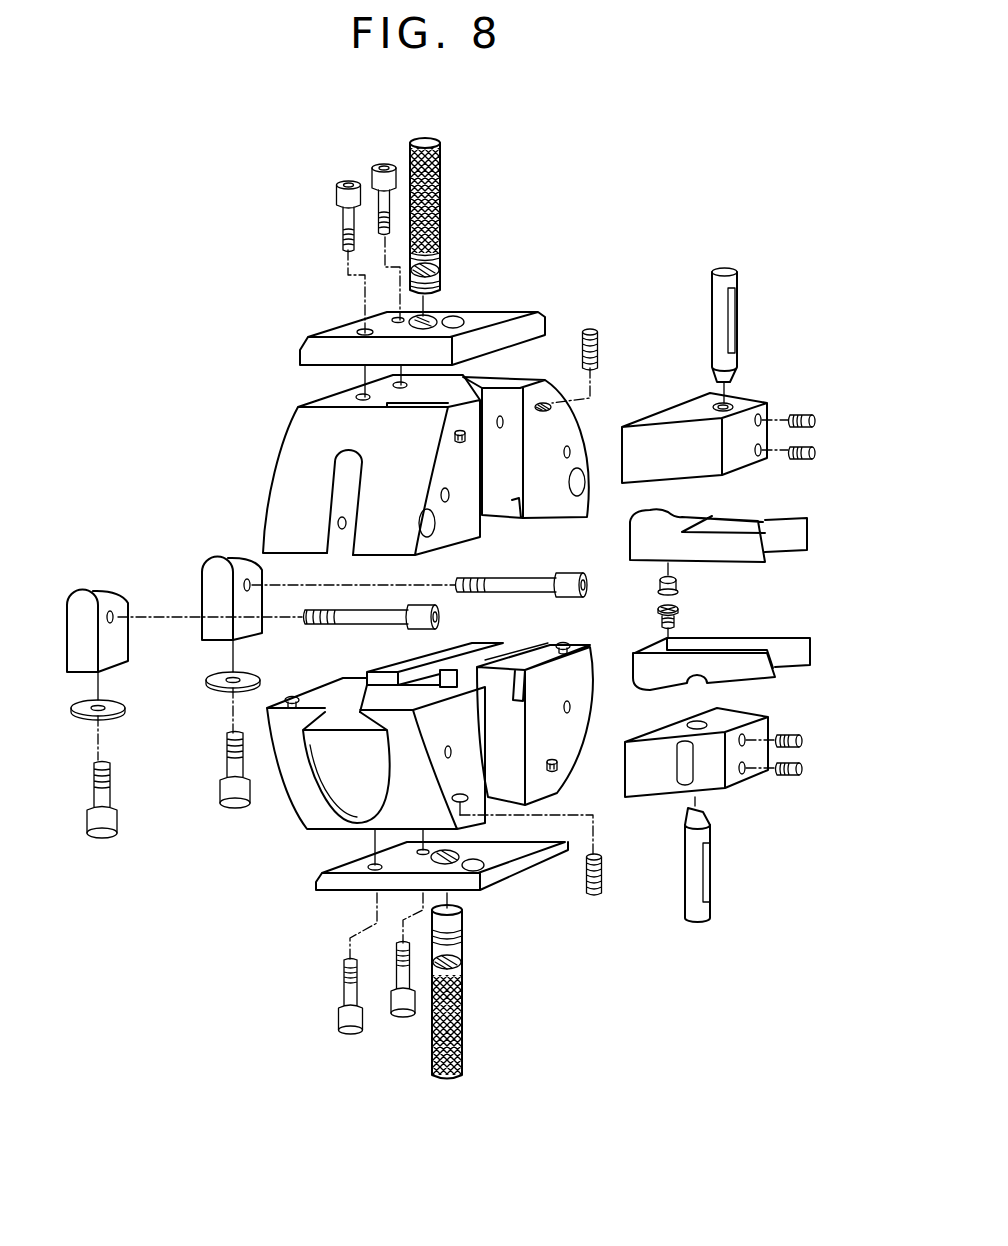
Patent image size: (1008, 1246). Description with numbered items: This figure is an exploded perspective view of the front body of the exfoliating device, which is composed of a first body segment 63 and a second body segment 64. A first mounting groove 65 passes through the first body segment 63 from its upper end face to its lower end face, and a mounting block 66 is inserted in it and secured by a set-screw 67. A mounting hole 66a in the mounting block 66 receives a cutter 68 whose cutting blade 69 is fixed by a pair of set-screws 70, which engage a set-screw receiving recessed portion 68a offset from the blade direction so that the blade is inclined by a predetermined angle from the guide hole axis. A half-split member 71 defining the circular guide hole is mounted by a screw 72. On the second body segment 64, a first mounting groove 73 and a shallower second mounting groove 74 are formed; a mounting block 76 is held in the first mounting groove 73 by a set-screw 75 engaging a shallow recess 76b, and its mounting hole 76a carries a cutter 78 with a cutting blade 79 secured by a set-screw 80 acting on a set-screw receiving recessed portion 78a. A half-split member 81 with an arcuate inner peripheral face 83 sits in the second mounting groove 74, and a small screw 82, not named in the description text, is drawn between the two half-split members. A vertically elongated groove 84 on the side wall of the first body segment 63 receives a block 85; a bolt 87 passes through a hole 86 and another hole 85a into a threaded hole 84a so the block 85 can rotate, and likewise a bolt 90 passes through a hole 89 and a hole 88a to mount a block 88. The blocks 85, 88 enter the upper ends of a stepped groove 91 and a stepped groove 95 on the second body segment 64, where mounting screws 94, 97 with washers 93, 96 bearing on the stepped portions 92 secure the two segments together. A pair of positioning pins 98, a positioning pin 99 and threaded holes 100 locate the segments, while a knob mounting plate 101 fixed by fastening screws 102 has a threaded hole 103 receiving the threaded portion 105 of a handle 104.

The first body segment 63 is at (292, 422).
The second body segment 64 is at (287, 797).
The first mounting groove 65 is at (507, 413).
The mounting block 66 is at (682, 410).
The mounting hole 66a is at (738, 398).
The set-screw 67 is at (595, 333).
The cutter 68 is at (727, 276).
The set-screw receiving recessed portion 68a is at (738, 302).
The cutting blade 69 is at (738, 396).
The set-screws 70 is at (815, 452).
The half-split member 71 is at (690, 510).
The screw 72 is at (685, 586).
The first mounting groove 73 is at (505, 735).
The second mounting groove 74 is at (413, 675).
The set-screw 75 is at (594, 898).
The mounting block 76 is at (627, 775).
The mounting hole 76a is at (700, 724).
The shallow recess 76b is at (674, 775).
The cutter 78 is at (695, 917).
The slot of pin 78a is at (712, 870).
The cutting blade 79 is at (705, 813).
The set-screw 80 is at (806, 741).
The half-split member 81 is at (645, 675).
The screw 82 is at (686, 614).
The arcuate inner peripheral face 83 is at (730, 645).
The vertically elongated groove 84 is at (340, 483).
The threaded hole 84a is at (340, 520).
The block 85 is at (84, 594).
The hole 85a is at (111, 612).
The hole 86 is at (420, 522).
The bolt 87 is at (437, 619).
The block 88 is at (206, 567).
The hole 88a is at (246, 583).
The hole 89 is at (580, 490).
The bolt 90 is at (565, 573).
The stepped groove 91 is at (337, 790).
The stepped portion 92 is at (335, 730).
The washer 93 is at (118, 717).
The mounting screw 94 is at (103, 834).
The stepped groove 95 is at (507, 653).
The washer 96 is at (218, 688).
The mounting screw 97 is at (228, 800).
The positioning pins 98 is at (292, 694).
The positioning pin 99 is at (452, 438).
The threaded holes 100 is at (567, 447).
The knob mounting plate 101 is at (318, 338).
The fastening screws 102 is at (337, 190).
The threaded hole 103 is at (432, 318).
The handle 104 is at (443, 162).
The threaded portion 105 is at (442, 270).